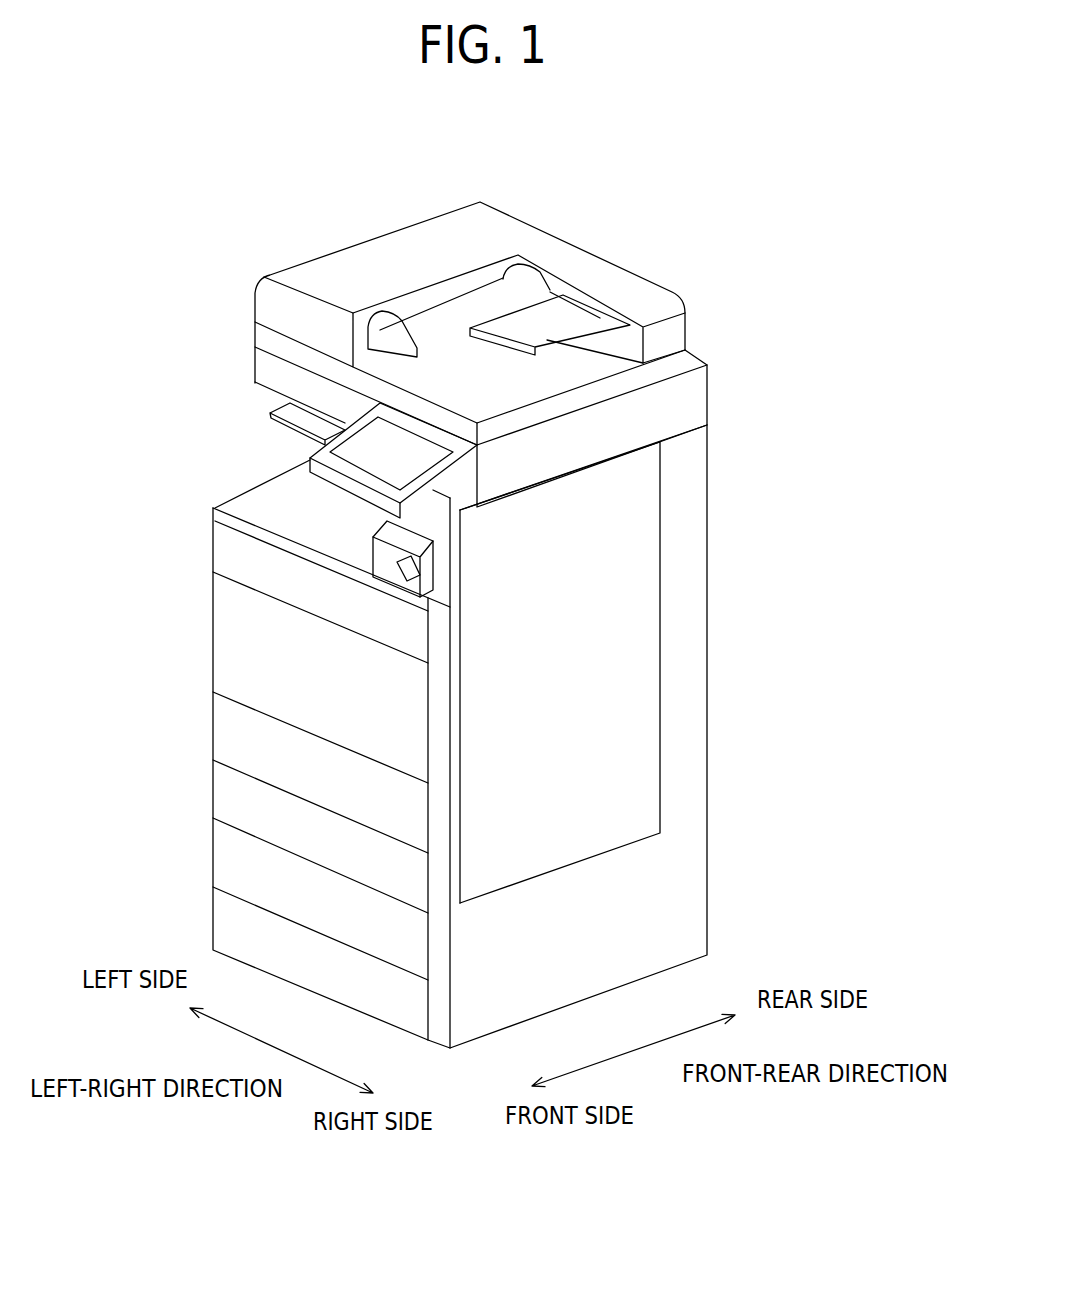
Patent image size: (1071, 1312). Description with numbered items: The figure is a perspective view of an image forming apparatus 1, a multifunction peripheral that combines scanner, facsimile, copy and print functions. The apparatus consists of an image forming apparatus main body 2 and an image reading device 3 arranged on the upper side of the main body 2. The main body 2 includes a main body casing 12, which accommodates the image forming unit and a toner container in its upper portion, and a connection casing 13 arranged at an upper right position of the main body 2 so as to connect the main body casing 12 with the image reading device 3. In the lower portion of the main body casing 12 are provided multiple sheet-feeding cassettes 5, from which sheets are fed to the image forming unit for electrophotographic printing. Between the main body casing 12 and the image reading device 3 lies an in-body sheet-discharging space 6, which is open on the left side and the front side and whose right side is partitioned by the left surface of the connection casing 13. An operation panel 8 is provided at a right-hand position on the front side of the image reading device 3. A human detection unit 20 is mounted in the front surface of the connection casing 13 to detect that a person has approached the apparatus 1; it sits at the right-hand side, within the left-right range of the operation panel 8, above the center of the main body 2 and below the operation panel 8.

The image forming apparatus 1 is at (310, 223).
The image forming apparatus main body 2 is at (688, 702).
The image reading device 3 is at (687, 403).
The sheet-feeding cassettes 5 is at (225, 788).
The in-body sheet-discharging space 6 is at (297, 517).
The operation panel 8 is at (310, 458).
The main body casing 12 is at (683, 802).
The connection casing 13 is at (437, 540).
The human detection unit 20 is at (430, 563).